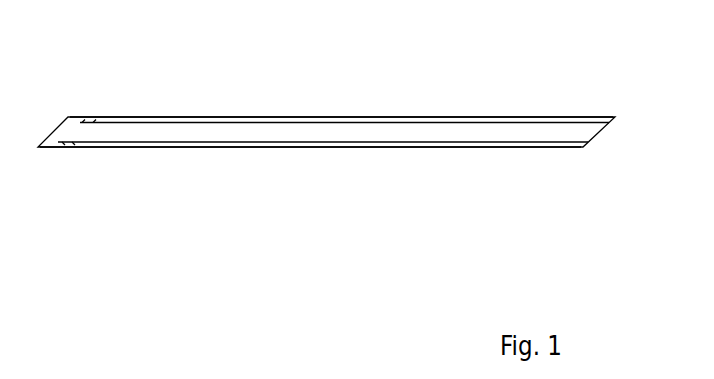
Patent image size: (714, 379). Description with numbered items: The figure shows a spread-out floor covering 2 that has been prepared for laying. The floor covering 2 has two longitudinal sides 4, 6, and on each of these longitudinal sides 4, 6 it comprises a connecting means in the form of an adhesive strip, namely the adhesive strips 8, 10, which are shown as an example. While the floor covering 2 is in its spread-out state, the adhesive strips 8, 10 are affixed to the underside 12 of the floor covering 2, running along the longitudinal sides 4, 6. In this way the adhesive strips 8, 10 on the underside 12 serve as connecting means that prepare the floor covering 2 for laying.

The floor covering 2 is at (445, 88).
The longitudinal side 4 is at (270, 153).
The longitudinal side 6 is at (302, 112).
The adhesive strip 8 is at (138, 145).
The adhesive strip 10 is at (172, 120).
The underside 12 is at (513, 132).